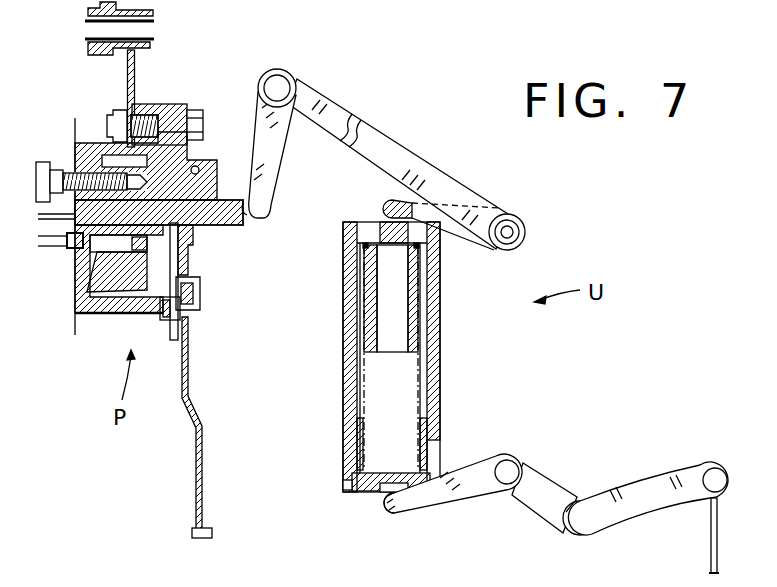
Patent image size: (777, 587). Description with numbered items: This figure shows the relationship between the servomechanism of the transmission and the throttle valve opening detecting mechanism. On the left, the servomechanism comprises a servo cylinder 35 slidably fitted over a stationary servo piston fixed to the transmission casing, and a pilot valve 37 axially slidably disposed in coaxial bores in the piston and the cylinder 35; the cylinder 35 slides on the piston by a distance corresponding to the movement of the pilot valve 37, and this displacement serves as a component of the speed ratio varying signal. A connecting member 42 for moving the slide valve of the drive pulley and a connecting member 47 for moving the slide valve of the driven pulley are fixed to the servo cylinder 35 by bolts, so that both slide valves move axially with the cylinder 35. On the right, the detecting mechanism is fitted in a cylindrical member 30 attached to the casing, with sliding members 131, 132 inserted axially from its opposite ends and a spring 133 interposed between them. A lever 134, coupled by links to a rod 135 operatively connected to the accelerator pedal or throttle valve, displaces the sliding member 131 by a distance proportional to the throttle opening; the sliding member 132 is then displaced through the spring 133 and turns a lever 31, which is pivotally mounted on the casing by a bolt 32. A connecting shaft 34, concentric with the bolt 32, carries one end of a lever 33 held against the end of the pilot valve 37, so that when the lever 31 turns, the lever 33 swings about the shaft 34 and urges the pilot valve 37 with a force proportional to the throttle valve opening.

The cylindrical member 30 is at (443, 335).
The lever 31 is at (480, 237).
The bolt 32 is at (527, 230).
The lever 33 is at (273, 167).
The connecting shaft 34 is at (277, 82).
The servo cylinder 35 is at (195, 263).
The pilot valve 37 is at (220, 222).
The connecting member 42 is at (135, 80).
The connecting member 47 is at (188, 387).
The sliding member 131 is at (390, 492).
The sliding member 132 is at (380, 217).
The spring 133 is at (420, 380).
The lever 134 is at (460, 503).
The rod 135 is at (712, 543).